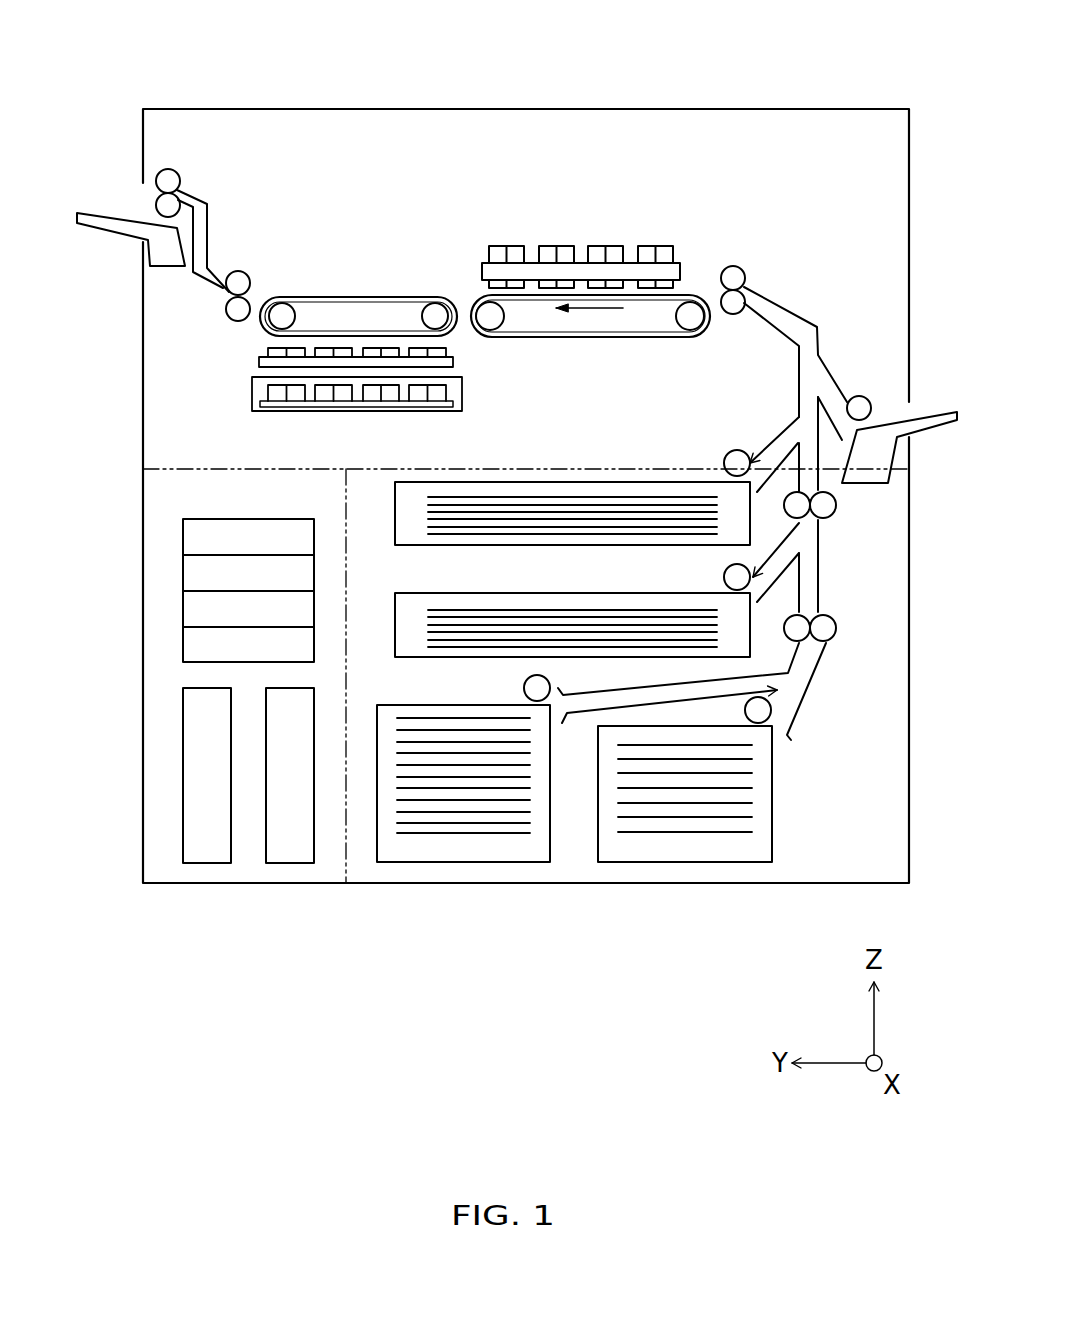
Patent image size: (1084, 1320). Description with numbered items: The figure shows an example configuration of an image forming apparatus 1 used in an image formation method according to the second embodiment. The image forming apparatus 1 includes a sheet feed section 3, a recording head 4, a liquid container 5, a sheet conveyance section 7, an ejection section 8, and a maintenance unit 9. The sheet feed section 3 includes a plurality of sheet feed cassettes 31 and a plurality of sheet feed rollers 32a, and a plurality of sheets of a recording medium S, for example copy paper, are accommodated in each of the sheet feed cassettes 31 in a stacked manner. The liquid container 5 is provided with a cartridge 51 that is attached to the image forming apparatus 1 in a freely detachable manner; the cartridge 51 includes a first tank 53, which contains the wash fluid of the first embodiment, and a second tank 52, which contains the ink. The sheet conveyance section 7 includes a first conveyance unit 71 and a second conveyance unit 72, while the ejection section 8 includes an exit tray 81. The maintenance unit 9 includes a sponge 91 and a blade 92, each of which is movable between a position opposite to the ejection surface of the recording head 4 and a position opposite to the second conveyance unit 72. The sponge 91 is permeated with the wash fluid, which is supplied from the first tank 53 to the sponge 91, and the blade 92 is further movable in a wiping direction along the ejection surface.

The image forming apparatus 1 is at (828, 85).
The sheet feed section 3 is at (797, 840).
The sheet feed cassette 31 is at (470, 547).
The sheet feed roller 32a is at (740, 457).
The recording head 4 is at (677, 208).
The liquid container 5 is at (177, 691).
The cartridge 51 is at (177, 691).
The second tank 52 is at (191, 668).
The first tank 53 is at (98, 721).
The sheet conveyance section 7 is at (823, 293).
The first conveyance unit 71 is at (698, 287).
The second conveyance unit 72 is at (290, 260).
The ejection section 8 is at (128, 192).
The exit tray 81 is at (107, 233).
The maintenance unit 9 is at (278, 401).
The sponge 91 is at (248, 356).
The blade 92 is at (253, 423).
The recording medium S is at (448, 535).